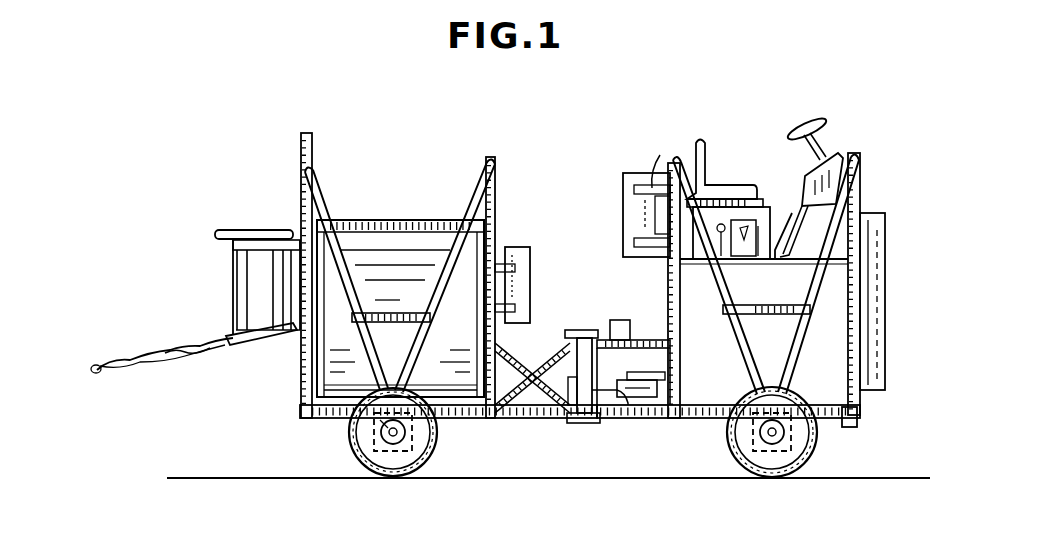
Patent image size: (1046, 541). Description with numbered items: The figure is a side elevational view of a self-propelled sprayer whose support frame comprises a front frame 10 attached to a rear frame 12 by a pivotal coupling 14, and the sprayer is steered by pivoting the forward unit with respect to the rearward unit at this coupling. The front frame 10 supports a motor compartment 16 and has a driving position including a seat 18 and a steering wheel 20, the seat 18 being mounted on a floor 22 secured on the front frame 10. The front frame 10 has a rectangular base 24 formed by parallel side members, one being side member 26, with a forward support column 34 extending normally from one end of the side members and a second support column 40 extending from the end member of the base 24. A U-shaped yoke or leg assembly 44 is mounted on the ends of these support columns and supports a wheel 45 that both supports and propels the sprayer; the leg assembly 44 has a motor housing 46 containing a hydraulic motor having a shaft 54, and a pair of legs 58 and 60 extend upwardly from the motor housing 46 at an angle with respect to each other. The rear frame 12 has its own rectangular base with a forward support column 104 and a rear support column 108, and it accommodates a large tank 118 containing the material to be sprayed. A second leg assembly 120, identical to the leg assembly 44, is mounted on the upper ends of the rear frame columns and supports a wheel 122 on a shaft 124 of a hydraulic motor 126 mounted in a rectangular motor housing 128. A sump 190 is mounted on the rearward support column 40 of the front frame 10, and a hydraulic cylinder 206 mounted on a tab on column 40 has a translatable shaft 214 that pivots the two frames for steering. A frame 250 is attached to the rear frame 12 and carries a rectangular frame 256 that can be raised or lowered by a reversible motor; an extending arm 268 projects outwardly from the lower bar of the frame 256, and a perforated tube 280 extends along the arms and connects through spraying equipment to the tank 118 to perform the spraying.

The front frame 10 is at (860, 358).
The rear frame 12 is at (300, 390).
The pivotal coupling 14 is at (590, 440).
The motor compartment 16 is at (727, 378).
The seat 18 is at (725, 185).
The steering wheel 20 is at (813, 120).
The floor 22 is at (778, 225).
The rectangular base 24 is at (850, 422).
The side member 26 is at (696, 415).
The forward support column 34 is at (862, 250).
The support column 40 is at (668, 280).
The leg assembly 44 is at (820, 289).
The wheel 45 is at (776, 470).
The motor housing 46 is at (820, 458).
The shaft 54 is at (766, 445).
The leg 58 is at (830, 233).
The leg 60 is at (715, 282).
The forward support column 104 is at (495, 200).
The rear support column 108 is at (330, 335).
The tank 118 is at (372, 268).
The second leg assembly 120 is at (312, 208).
The wheel 122 is at (380, 468).
The shaft 124 is at (395, 440).
The hydraulic motor 126 is at (440, 446).
The motor housing 128 is at (365, 445).
The sump 190 is at (628, 172).
The hydraulic cylinder 206 is at (658, 160).
The translatable shaft 214 is at (610, 388).
The frame 250 is at (290, 233).
The rectangular frame 256 is at (232, 274).
The extending arm 268 is at (175, 365).
The perforated tube 280 is at (200, 350).